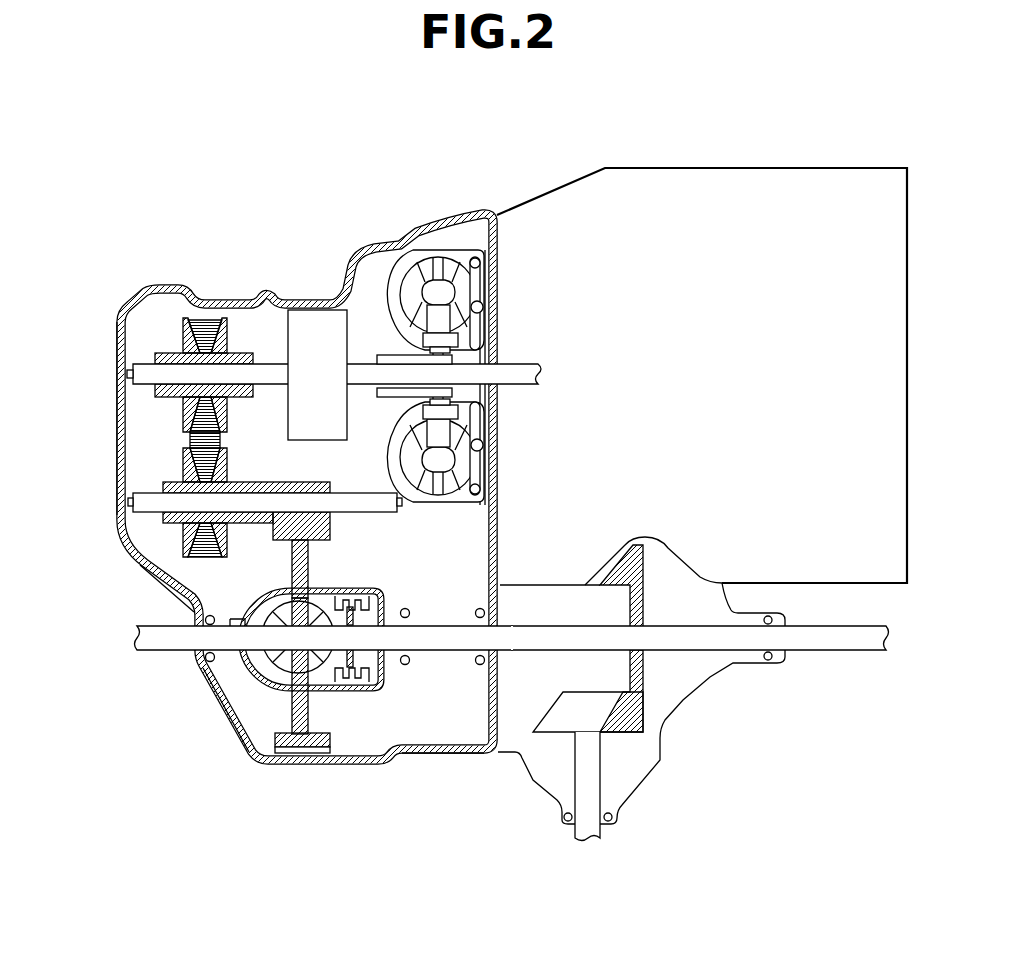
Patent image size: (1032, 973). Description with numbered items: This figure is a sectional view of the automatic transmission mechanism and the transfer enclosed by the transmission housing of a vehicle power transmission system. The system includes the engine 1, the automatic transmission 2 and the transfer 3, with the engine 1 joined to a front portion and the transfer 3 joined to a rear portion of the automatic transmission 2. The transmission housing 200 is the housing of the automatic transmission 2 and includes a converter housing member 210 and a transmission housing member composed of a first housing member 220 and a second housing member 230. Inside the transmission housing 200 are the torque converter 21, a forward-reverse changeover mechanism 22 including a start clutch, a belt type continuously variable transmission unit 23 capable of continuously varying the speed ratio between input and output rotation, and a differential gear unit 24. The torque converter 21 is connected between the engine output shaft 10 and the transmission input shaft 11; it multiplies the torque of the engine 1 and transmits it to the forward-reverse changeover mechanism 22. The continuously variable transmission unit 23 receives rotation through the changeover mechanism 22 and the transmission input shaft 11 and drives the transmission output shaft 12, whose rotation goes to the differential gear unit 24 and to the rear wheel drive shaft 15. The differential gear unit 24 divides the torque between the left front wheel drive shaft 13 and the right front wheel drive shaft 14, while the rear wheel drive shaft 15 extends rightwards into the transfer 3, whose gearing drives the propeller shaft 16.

The engine 1 is at (700, 168).
The automatic transmission 2 is at (131, 291).
The transfer 3 is at (680, 722).
The engine output shaft 10 is at (520, 364).
The transmission input shaft 11 is at (143, 372).
The transmission output shaft 12 is at (150, 494).
The left front wheel drive shaft 13 is at (148, 655).
The right front wheel drive shaft 14 is at (845, 655).
The rear wheel drive shaft 15 is at (530, 600).
The propeller shaft 16 is at (600, 828).
The torque converter 21 is at (428, 250).
The forward-reverse changeover mechanism 22 is at (320, 310).
The belt type continuously variable transmission unit 23 is at (208, 527).
The differential gear unit 24 is at (272, 695).
The transmission housing 200 is at (117, 400).
The converter housing member 210 is at (430, 756).
The first housing member 220 is at (292, 766).
The second housing member 230 is at (215, 700).